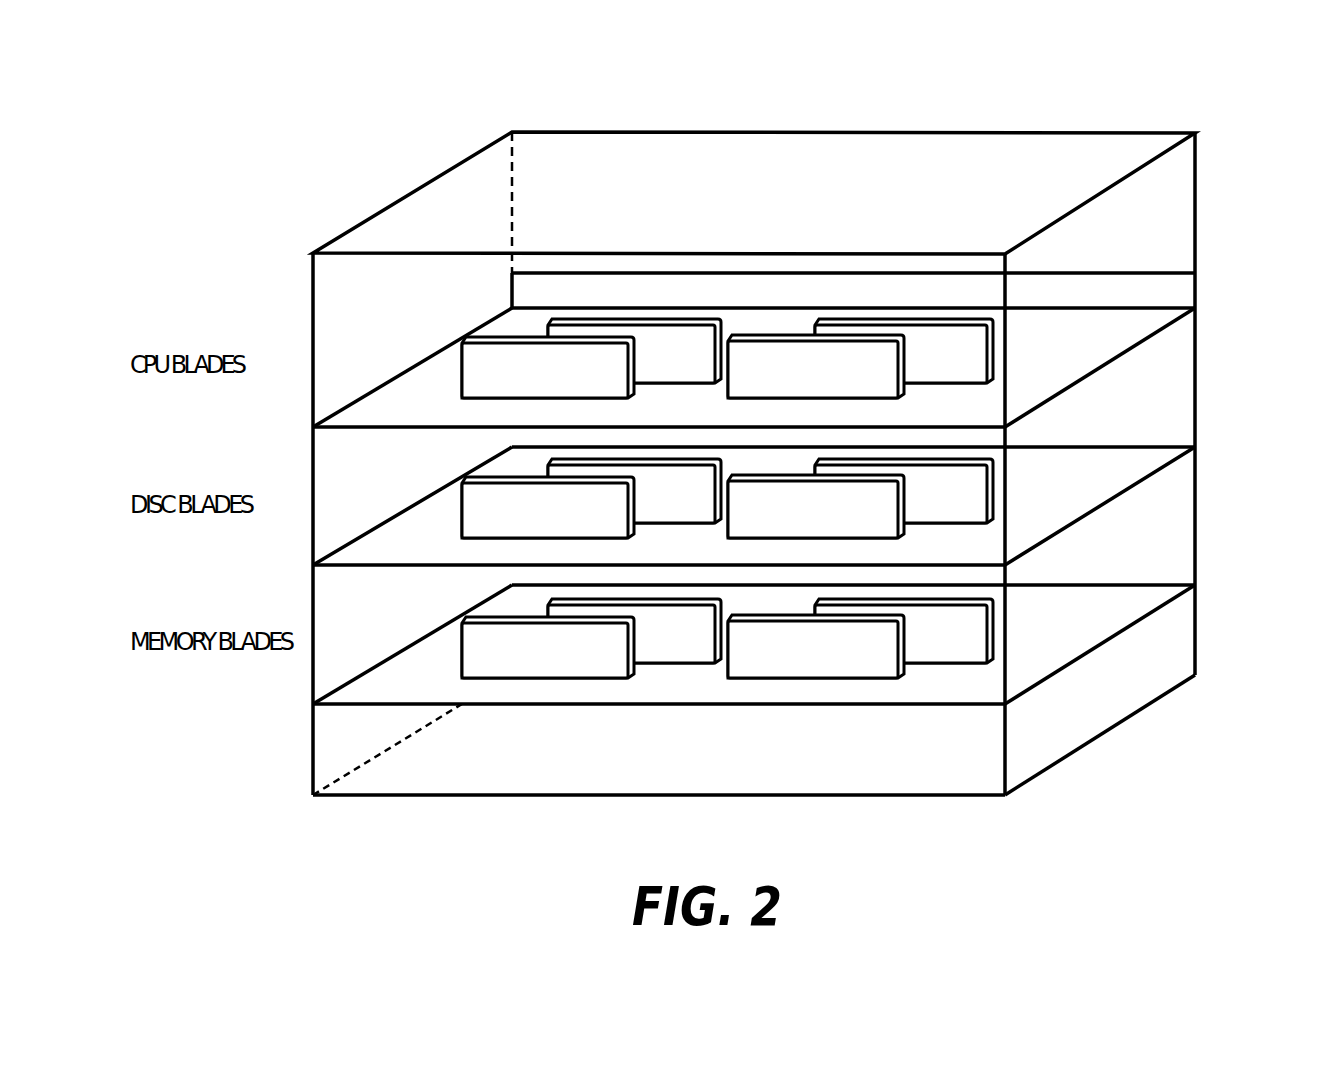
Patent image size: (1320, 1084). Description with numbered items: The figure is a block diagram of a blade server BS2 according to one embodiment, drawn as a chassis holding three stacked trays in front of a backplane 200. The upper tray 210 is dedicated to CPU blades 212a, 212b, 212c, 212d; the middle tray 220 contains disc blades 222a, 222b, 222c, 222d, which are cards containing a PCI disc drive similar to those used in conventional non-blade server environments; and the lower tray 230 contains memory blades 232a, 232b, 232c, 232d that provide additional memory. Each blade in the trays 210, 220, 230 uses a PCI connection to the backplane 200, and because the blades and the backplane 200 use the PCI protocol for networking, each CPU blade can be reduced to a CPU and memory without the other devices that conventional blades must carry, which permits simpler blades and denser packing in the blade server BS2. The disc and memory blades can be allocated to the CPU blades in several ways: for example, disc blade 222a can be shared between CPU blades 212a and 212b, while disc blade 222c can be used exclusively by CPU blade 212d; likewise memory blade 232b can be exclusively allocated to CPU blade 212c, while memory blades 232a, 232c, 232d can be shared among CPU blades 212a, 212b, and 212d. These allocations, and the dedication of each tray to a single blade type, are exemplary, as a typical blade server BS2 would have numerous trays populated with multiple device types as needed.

The blade server BS2 is at (1084, 116).
The backplane 200 is at (1160, 394).
The tray 210 is at (406, 454).
The tray 220 is at (406, 592).
The tray 230 is at (406, 729).
The CPU blade 212a is at (517, 386).
The CPU blade 212b is at (643, 371).
The CPU blade 212c is at (785, 386).
The CPU blade 212d is at (915, 371).
The disc blade 222a is at (517, 526).
The disc blade 222b is at (643, 511).
The disc blade 222c is at (785, 526).
The disc blade 222d is at (915, 511).
The memory blade 232a is at (517, 666).
The memory blade 232b is at (643, 651).
The memory blade 232c is at (785, 666).
The memory blade 232d is at (915, 651).